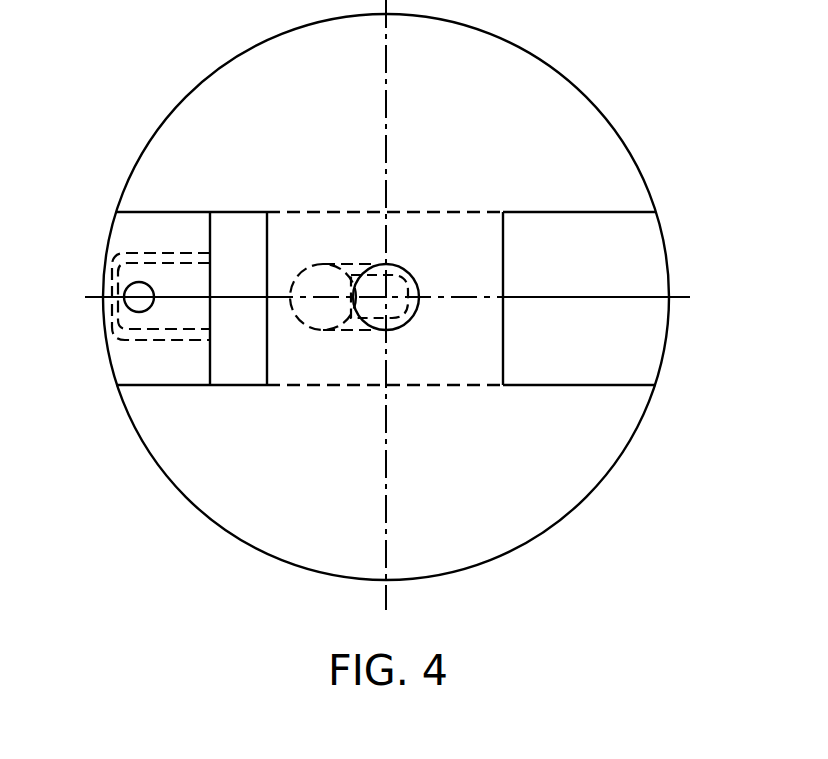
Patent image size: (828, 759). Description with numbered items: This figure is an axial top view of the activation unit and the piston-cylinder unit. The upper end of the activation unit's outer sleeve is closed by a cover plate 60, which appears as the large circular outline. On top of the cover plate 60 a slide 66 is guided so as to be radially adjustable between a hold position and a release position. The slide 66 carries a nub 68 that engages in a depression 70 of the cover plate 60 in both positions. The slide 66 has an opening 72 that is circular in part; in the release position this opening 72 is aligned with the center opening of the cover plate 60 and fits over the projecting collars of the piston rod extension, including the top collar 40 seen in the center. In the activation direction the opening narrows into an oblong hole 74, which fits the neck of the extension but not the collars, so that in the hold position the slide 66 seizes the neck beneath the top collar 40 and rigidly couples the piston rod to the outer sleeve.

The top collar 40 is at (412, 317).
The cover plate 60 is at (572, 116).
The slide 66 is at (648, 250).
The nub 68 is at (137, 284).
The depression 70 is at (113, 305).
The opening 72 is at (320, 262).
The oblong hole 74 is at (418, 278).